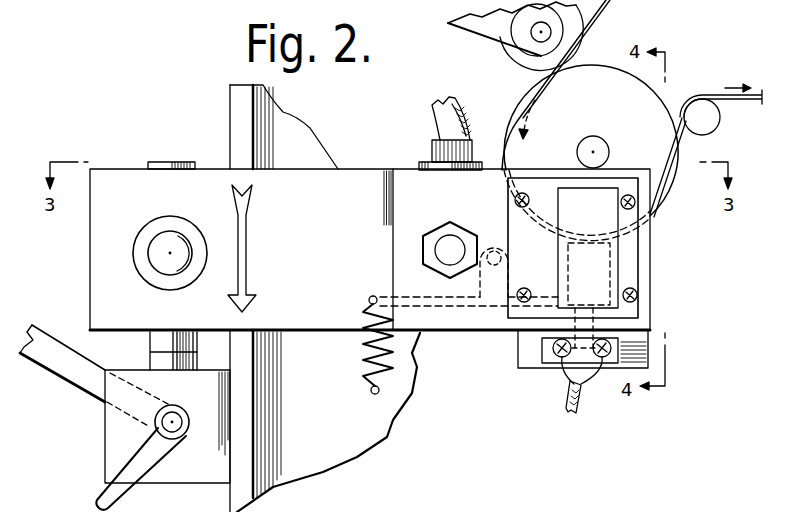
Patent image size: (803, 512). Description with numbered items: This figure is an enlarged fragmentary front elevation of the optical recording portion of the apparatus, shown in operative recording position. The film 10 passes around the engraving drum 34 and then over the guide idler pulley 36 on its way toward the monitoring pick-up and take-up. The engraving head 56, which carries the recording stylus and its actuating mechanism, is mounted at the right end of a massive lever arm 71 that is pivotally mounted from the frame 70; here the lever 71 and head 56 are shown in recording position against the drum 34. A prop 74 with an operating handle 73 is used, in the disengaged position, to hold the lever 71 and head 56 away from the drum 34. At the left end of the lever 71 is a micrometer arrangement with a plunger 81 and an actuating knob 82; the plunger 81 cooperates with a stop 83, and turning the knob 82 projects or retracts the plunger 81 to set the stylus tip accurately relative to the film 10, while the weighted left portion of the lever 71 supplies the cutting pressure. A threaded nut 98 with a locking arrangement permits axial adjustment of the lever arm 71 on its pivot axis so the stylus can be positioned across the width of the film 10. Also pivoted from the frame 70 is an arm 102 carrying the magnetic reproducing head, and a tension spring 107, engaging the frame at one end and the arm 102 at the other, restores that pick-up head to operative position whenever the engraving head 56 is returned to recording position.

The film 10 is at (604, 9).
The engraving drum 34 is at (598, 68).
The guide idler pulley 36 is at (721, 122).
The engraving head 56 is at (658, 264).
The frame 70 is at (338, 453).
The lever arm 71 is at (285, 323).
The operating handle 73 is at (112, 498).
The prop 74 is at (56, 362).
The plunger 81 is at (155, 341).
The actuating knob 82 is at (176, 232).
The stop 83 is at (197, 361).
The threaded nut 98 is at (450, 247).
The arm 102 is at (442, 307).
The tension spring 107 is at (387, 357).